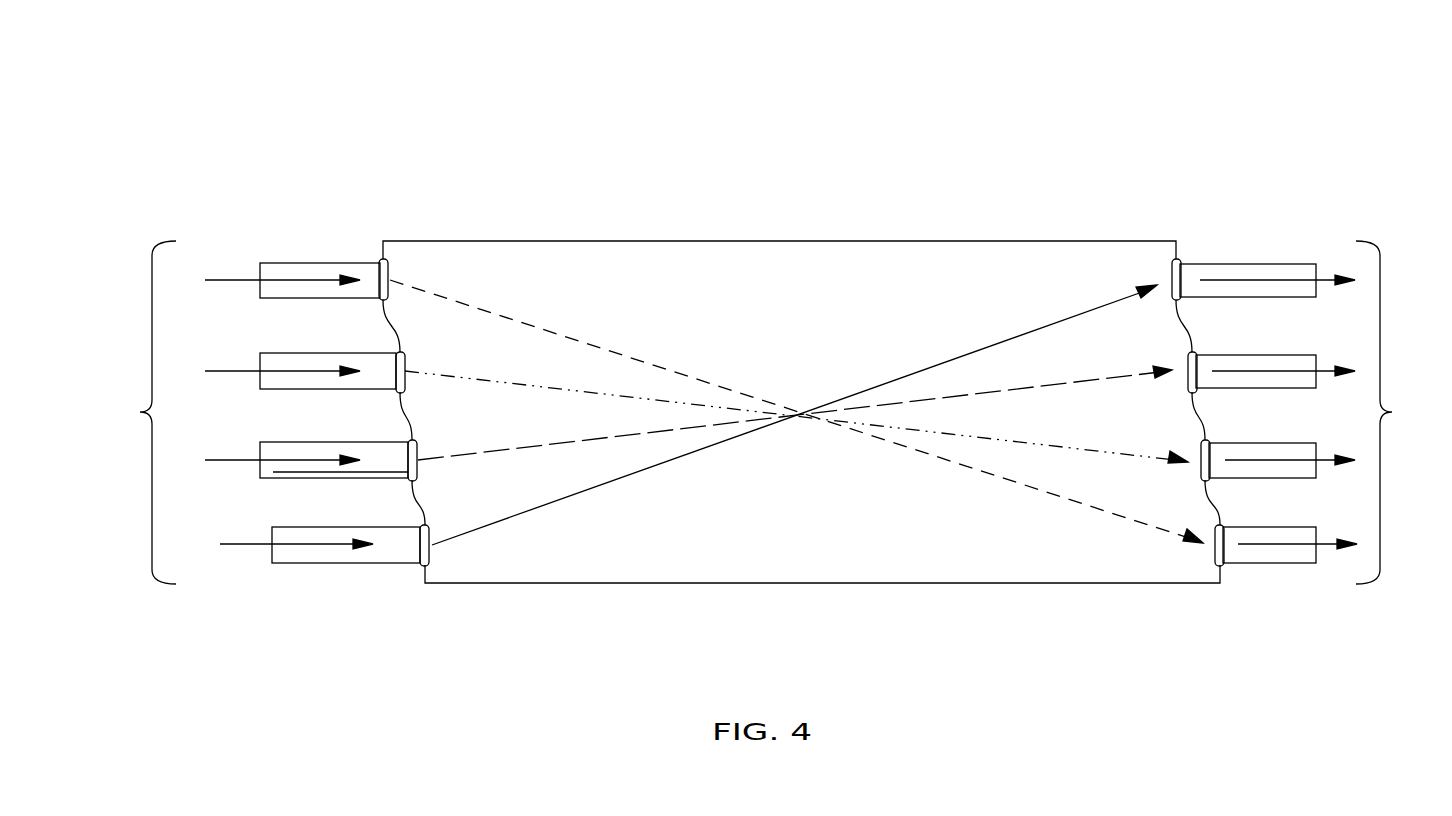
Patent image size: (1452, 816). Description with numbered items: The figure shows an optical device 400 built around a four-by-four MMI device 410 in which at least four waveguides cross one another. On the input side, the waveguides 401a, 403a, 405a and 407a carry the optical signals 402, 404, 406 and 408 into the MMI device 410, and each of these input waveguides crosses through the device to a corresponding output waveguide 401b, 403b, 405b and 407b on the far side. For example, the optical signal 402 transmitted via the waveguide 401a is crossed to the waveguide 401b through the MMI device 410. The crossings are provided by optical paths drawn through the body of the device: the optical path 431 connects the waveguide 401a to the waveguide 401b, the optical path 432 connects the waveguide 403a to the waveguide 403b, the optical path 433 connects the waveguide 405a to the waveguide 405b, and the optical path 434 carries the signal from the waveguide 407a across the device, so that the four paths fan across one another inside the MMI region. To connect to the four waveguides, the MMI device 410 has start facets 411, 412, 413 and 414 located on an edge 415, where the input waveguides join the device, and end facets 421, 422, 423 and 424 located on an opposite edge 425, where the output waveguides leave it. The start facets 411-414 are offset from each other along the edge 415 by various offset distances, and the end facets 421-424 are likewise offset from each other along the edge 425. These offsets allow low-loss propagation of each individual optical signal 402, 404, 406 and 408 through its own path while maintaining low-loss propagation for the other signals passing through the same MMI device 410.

The optical device 400 is at (1397, 80).
The waveguide 401a is at (322, 263).
The waveguide 401b is at (1253, 563).
The optical signal 402 is at (240, 280).
The waveguide 403a is at (327, 353).
The waveguide 403b is at (1243, 443).
The optical signal 404 is at (240, 371).
The waveguide 405a is at (327, 442).
The waveguide 405b is at (1307, 333).
The optical signal 406 is at (235, 460).
The waveguide 407a is at (340, 527).
The waveguide 407b is at (1243, 263).
The optical signal 408 is at (248, 543).
The MMI device 410 is at (993, 241).
The start facet 411 is at (390, 272).
The start facet 412 is at (407, 350).
The start facet 413 is at (417, 447).
The start facet 414 is at (430, 528).
The edge 415 is at (135, 412).
The end facet 421 is at (1213, 563).
The end facet 422 is at (1200, 477).
The end facet 423 is at (1187, 387).
The end facet 424 is at (1170, 303).
The edge 425 is at (1397, 412).
The optical path 431 is at (600, 344).
The optical path 432 is at (1060, 443).
The optical path 433 is at (560, 444).
The optical path 434 is at (600, 486).